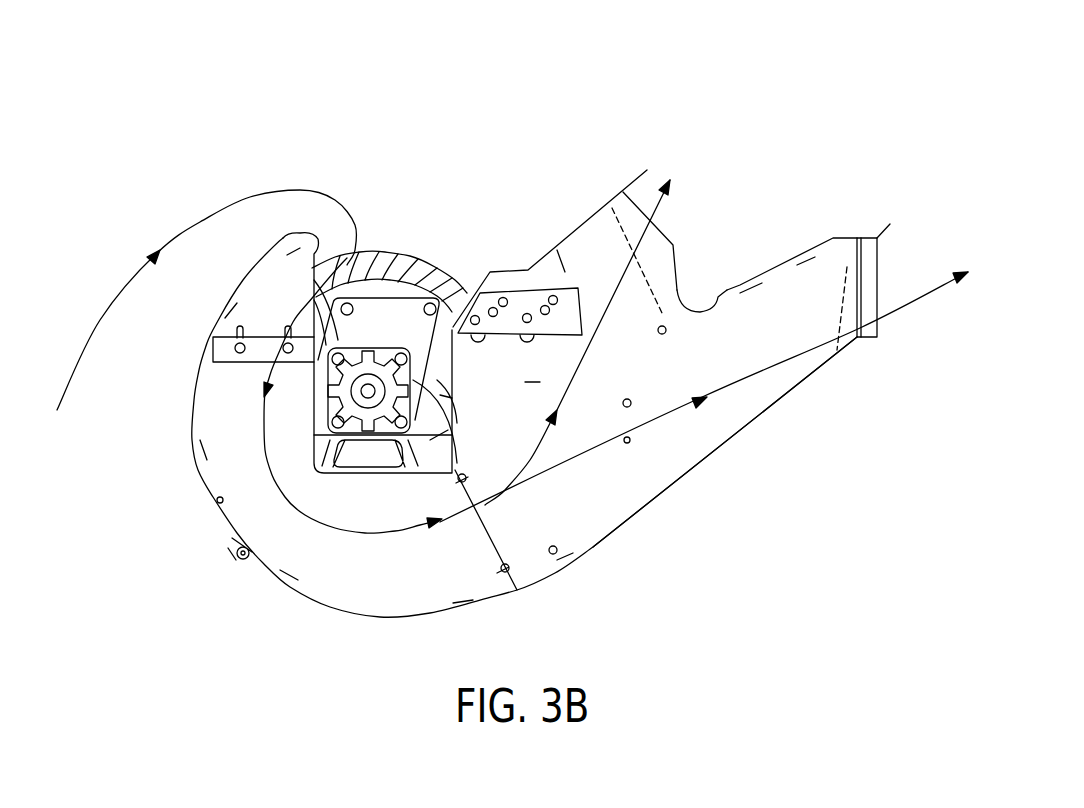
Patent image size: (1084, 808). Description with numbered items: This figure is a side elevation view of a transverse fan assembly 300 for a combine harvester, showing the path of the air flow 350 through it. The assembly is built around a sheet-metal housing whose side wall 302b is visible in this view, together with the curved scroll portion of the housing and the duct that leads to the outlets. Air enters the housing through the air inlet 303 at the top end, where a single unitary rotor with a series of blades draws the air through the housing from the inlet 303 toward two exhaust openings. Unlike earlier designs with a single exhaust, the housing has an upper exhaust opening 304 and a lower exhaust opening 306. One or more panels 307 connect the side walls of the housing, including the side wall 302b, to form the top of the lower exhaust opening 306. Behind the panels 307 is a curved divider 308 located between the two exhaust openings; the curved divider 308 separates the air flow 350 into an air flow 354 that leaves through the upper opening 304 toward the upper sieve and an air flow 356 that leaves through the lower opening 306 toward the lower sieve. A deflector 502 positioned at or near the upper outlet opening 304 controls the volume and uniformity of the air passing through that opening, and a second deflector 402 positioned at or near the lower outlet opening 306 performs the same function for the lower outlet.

The transverse fan assembly 300 is at (162, 97).
The air flow 350 is at (267, 195).
The air inlet 303 is at (392, 188).
The air flow 354 is at (622, 265).
The deflector 502 is at (617, 222).
The upper exhaust opening 304 is at (663, 232).
The curved divider 308 is at (682, 300).
The panels 307 is at (740, 287).
The deflector 402 is at (843, 283).
The lower exhaust opening 306 is at (877, 253).
The air flow 356 is at (757, 372).
The side wall 302b is at (627, 407).